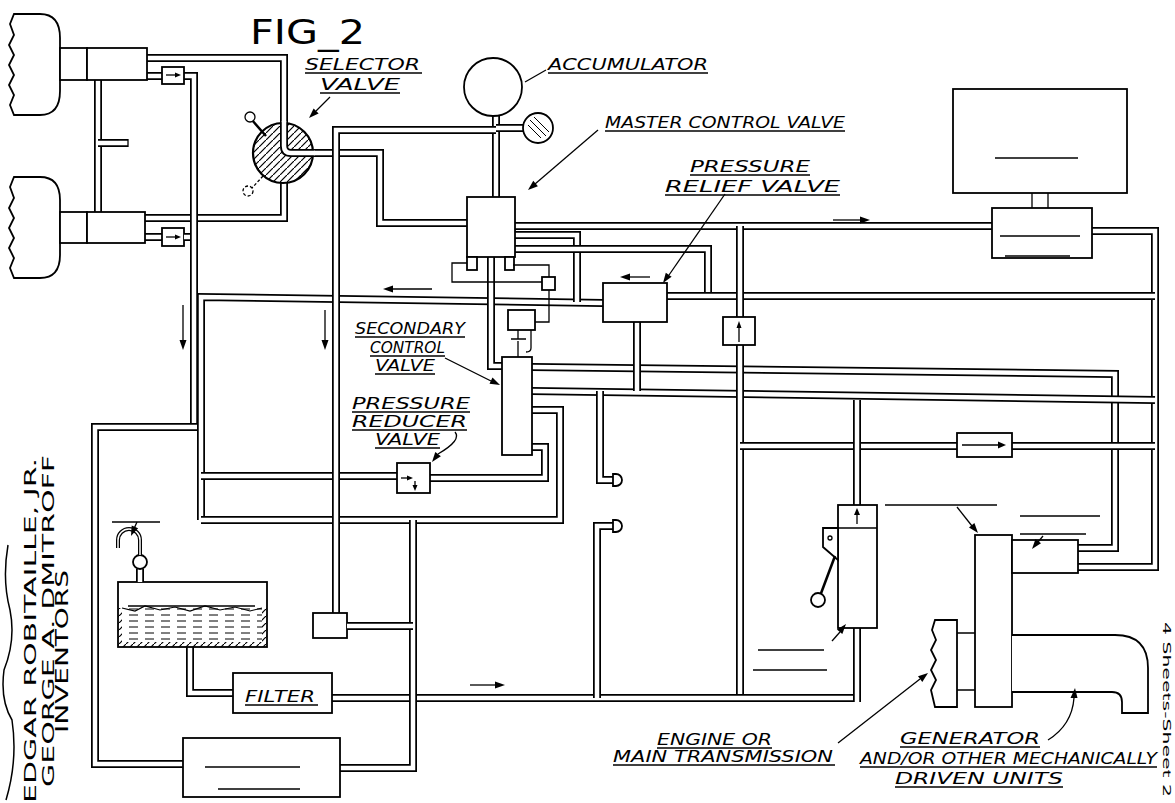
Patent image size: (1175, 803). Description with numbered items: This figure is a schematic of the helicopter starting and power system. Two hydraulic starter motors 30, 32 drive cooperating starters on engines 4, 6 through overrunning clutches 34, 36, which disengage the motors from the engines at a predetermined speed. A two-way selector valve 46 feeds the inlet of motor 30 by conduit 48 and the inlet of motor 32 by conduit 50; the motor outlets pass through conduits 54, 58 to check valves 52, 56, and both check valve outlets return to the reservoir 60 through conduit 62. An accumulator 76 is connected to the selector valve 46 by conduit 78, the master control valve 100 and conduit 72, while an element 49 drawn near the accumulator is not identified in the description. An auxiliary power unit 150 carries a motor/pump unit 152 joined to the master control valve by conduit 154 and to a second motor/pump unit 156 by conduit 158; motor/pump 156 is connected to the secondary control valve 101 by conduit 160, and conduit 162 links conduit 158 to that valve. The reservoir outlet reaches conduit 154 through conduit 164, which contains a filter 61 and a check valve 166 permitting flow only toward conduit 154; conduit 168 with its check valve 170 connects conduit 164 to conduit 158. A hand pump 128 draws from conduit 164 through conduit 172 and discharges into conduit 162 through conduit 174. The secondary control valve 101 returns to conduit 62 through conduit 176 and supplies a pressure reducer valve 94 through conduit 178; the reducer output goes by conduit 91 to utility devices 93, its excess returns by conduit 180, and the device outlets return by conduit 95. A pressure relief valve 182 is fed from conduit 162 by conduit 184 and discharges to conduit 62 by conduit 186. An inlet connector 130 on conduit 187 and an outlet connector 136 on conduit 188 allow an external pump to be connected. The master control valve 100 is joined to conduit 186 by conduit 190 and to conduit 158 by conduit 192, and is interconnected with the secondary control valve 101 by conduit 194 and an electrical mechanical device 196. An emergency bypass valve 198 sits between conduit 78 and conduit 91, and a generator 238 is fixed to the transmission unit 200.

The engine 4 is at (40, 78).
The engine 6 is at (40, 246).
The hydraulic starter motor 30 is at (121, 56).
The hydraulic starter motor 32 is at (108, 244).
The overrunning clutch 34 is at (73, 52).
The overrunning clutch 36 is at (75, 244).
The two-way selector valve 46 is at (253, 150).
The conduit 48 is at (212, 53).
The pressure gauge 49 is at (551, 122).
The conduit 50 is at (165, 217).
The check valve 52 is at (173, 84).
The conduit 54 is at (157, 78).
The check valve 56 is at (172, 248).
The conduit 58 is at (153, 245).
The reservoir 60 is at (222, 582).
The filter 61 is at (296, 673).
The conduit 62 is at (196, 112).
The conduit 72 is at (390, 175).
The accumulator 76 is at (503, 100).
The conduit 78 is at (499, 172).
The conduit 91 is at (417, 564).
The utility devices 93 is at (195, 738).
The pressure reducer valve 94 is at (403, 463).
The conduit 95 is at (107, 423).
The master control valve 100 is at (500, 238).
The secondary control valve 101 is at (505, 420).
The hand pump 128 is at (880, 571).
The inlet connector 130 is at (625, 481).
The outlet connector 136 is at (625, 525).
The auxiliary power unit 150 is at (957, 79).
The motor/pump unit 152 is at (992, 246).
The conduit 154 is at (812, 210).
The second motor/pump unit 156 is at (1045, 568).
The conduit 158 is at (1152, 322).
The conduit 160 is at (1035, 345).
The conduit 162 is at (843, 398).
The conduit 164 is at (743, 264).
The check valve 166 is at (755, 331).
The conduit 168 is at (937, 418).
The check valve 170 is at (990, 433).
The conduit 172 is at (815, 683).
The conduit 174 is at (853, 488).
The conduit 176 is at (225, 517).
The conduit 178 is at (535, 490).
The conduit 180 is at (280, 446).
The pressure relief valve 182 is at (645, 316).
The conduit 184 is at (640, 345).
The conduit 186 is at (283, 278).
The conduit 187 is at (603, 432).
The conduit 188 is at (600, 606).
The conduit 190 is at (578, 266).
The conduit 192 is at (893, 270).
The conduit 194 is at (488, 312).
The electrical mechanical device 196 is at (546, 332).
The emergency bypass valve 198 is at (319, 613).
The transmission unit 200 is at (977, 547).
The generator 238 is at (1033, 647).